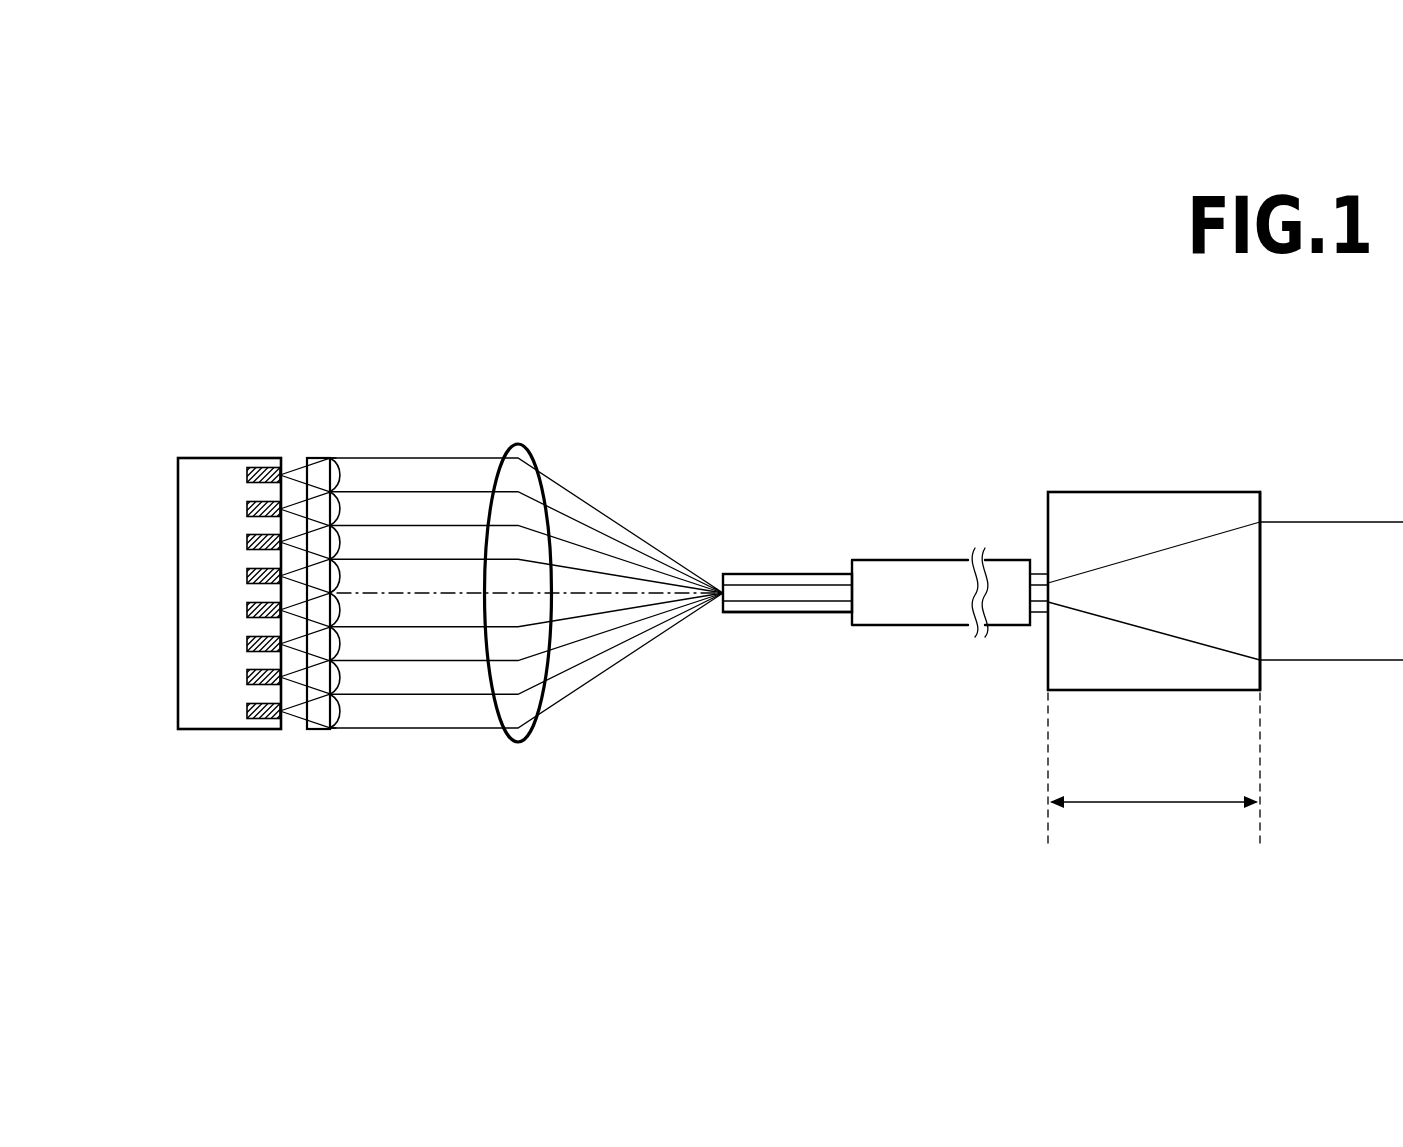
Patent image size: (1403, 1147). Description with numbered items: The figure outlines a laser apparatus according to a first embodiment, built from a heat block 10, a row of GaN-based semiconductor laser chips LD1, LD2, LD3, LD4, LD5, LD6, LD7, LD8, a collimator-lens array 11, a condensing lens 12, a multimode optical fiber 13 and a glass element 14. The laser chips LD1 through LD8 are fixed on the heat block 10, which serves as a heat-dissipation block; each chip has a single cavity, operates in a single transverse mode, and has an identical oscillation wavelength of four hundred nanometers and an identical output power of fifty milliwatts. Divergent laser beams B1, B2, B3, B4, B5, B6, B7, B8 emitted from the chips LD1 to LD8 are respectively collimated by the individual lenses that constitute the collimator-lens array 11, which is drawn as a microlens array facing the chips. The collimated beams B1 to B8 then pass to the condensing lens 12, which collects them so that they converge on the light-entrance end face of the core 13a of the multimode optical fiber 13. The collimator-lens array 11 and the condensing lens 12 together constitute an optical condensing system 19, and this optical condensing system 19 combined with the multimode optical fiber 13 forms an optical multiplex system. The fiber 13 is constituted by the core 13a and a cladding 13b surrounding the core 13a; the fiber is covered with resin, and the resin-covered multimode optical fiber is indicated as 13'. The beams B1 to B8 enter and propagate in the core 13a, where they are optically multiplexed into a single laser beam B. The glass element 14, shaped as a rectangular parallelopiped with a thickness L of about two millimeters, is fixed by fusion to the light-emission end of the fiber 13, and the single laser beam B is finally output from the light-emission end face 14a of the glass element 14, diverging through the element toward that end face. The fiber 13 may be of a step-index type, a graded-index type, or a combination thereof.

The heat block 10 is at (197, 729).
The GaN-based semiconductor laser chip LD1 is at (246, 475).
The GaN-based semiconductor laser chip LD2 is at (246, 509).
The GaN-based semiconductor laser chip LD3 is at (246, 542).
The GaN-based semiconductor laser chip LD4 is at (246, 576).
The GaN-based semiconductor laser chip LD5 is at (246, 610).
The GaN-based semiconductor laser chip LD6 is at (246, 644).
The GaN-based semiconductor laser chip LD7 is at (246, 677).
The GaN-based semiconductor laser chip LD8 is at (246, 711).
The collimator-lens array 11 is at (313, 729).
The laser beam B1 is at (350, 477).
The laser beam B2 is at (373, 510).
The laser beam B3 is at (413, 545).
The laser beam B4 is at (462, 585).
The laser beam B5 is at (372, 607).
The laser beam B6 is at (420, 645).
The laser beam B7 is at (462, 680).
The laser beam B8 is at (482, 710).
The condensing lens 12 is at (515, 441).
The optical condensing system 19 is at (512, 774).
The multimode optical fiber 13 is at (787, 537).
The core 13a is at (764, 588).
The cladding 13b is at (790, 605).
The resin-covered multimode optical fiber 13' is at (950, 545).
The glass element 14 is at (1132, 489).
The light-emission end face 14a is at (1262, 507).
The laser beam B is at (1292, 542).
The thickness L is at (1154, 769).